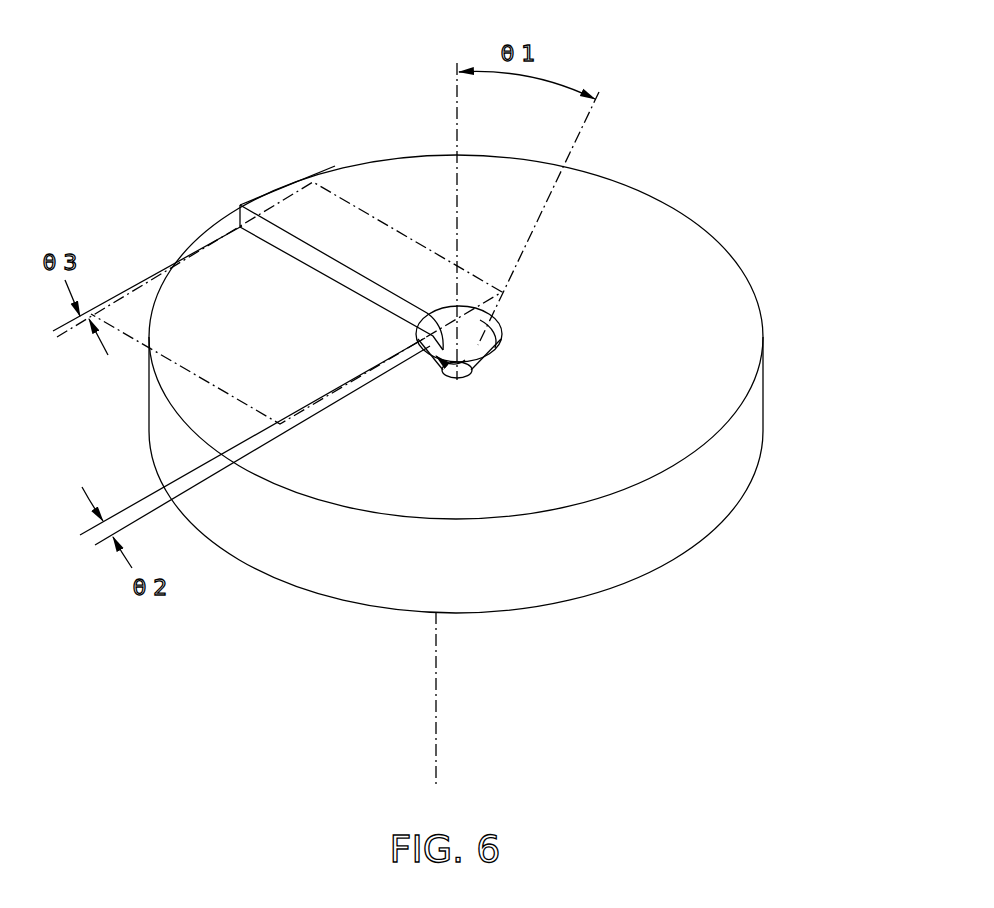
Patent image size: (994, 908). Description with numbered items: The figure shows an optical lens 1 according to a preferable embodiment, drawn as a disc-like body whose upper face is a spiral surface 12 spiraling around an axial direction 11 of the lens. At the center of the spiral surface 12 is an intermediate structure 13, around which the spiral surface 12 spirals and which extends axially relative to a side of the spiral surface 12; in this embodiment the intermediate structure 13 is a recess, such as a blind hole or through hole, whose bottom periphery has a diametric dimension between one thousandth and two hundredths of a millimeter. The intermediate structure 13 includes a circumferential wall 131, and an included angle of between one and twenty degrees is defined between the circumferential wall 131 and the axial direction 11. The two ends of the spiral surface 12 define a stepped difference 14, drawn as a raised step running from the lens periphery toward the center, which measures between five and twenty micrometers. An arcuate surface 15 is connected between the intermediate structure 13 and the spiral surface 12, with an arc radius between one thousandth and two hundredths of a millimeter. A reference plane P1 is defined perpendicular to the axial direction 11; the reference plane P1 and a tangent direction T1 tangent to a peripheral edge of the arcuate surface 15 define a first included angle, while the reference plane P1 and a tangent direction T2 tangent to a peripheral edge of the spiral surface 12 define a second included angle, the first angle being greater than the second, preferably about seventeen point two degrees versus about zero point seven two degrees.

The optical lens 1 is at (488, 340).
The axial direction 11 is at (437, 720).
The spiral surface 12 is at (690, 280).
The intermediate structure 13 is at (557, 499).
The circumferential wall 131 is at (478, 345).
The stepped difference 14 is at (240, 213).
The arcuate surface 15 is at (482, 344).
The reference plane P1 is at (185, 367).
The tangent direction T1 is at (157, 508).
The tangent direction T2 is at (66, 338).